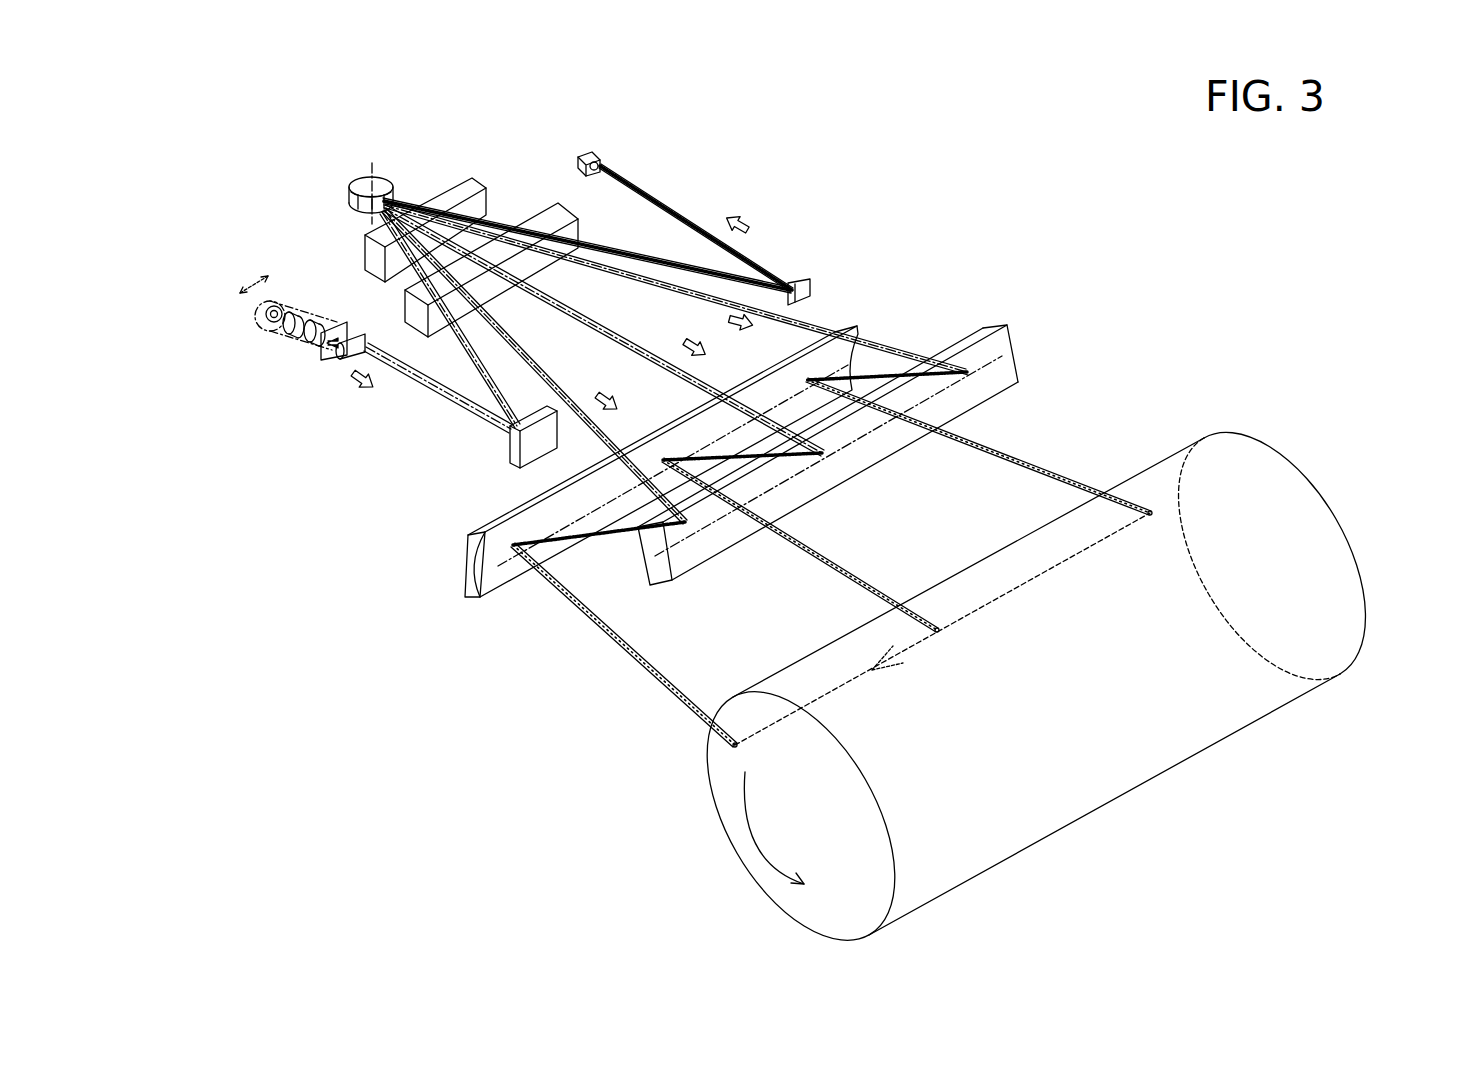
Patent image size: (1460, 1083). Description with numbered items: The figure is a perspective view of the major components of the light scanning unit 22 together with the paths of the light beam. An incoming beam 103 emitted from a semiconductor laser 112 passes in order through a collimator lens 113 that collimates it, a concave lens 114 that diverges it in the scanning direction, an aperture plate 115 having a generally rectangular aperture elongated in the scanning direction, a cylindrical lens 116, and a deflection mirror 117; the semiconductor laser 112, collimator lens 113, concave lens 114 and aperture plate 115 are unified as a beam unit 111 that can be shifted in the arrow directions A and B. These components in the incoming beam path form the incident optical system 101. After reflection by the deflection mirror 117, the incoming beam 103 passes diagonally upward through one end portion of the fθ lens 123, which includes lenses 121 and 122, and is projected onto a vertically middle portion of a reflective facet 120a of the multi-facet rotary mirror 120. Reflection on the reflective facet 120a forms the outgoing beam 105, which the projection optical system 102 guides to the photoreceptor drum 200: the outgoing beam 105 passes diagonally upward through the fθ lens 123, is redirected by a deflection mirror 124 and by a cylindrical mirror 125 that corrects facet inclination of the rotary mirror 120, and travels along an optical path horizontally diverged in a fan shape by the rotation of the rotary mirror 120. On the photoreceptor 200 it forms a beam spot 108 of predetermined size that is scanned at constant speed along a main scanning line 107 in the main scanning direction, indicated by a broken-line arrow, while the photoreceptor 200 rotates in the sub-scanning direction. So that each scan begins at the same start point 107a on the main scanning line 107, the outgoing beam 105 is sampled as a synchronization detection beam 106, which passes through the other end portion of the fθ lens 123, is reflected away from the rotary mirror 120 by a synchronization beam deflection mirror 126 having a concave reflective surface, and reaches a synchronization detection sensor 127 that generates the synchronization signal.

The light scanning unit 22 is at (782, 156).
The incident optical system 101 is at (298, 470).
The projection optical system 102 is at (943, 291).
The incoming beam 103 is at (473, 358).
The outgoing beam 105 is at (567, 299).
The synchronization detection beam 106 is at (667, 207).
The main scanning line 107 is at (1033, 573).
The start point 107a is at (1152, 513).
The beam spot 108 is at (1152, 513).
The beam unit 111 is at (292, 300).
The semiconductor laser 112 is at (262, 318).
The collimator lens 113 is at (283, 334).
The concave lens 114 is at (304, 342).
The aperture plate 115 is at (324, 352).
The cylindrical lens 116 is at (344, 364).
The deflection mirror 117 is at (509, 456).
The multi-facet rotary mirror 120 is at (351, 178).
The reflective facet 120a is at (349, 209).
The lens 121 is at (480, 178).
The lens 122 is at (552, 203).
The fθ lens 123 is at (550, 95).
The deflection mirror 124 is at (1019, 353).
The cylindrical mirror 125 is at (452, 570).
The synchronization beam deflection mirror 126 is at (803, 280).
The synchronization detection sensor 127 is at (597, 158).
The photoreceptor drum 200 is at (1276, 445).